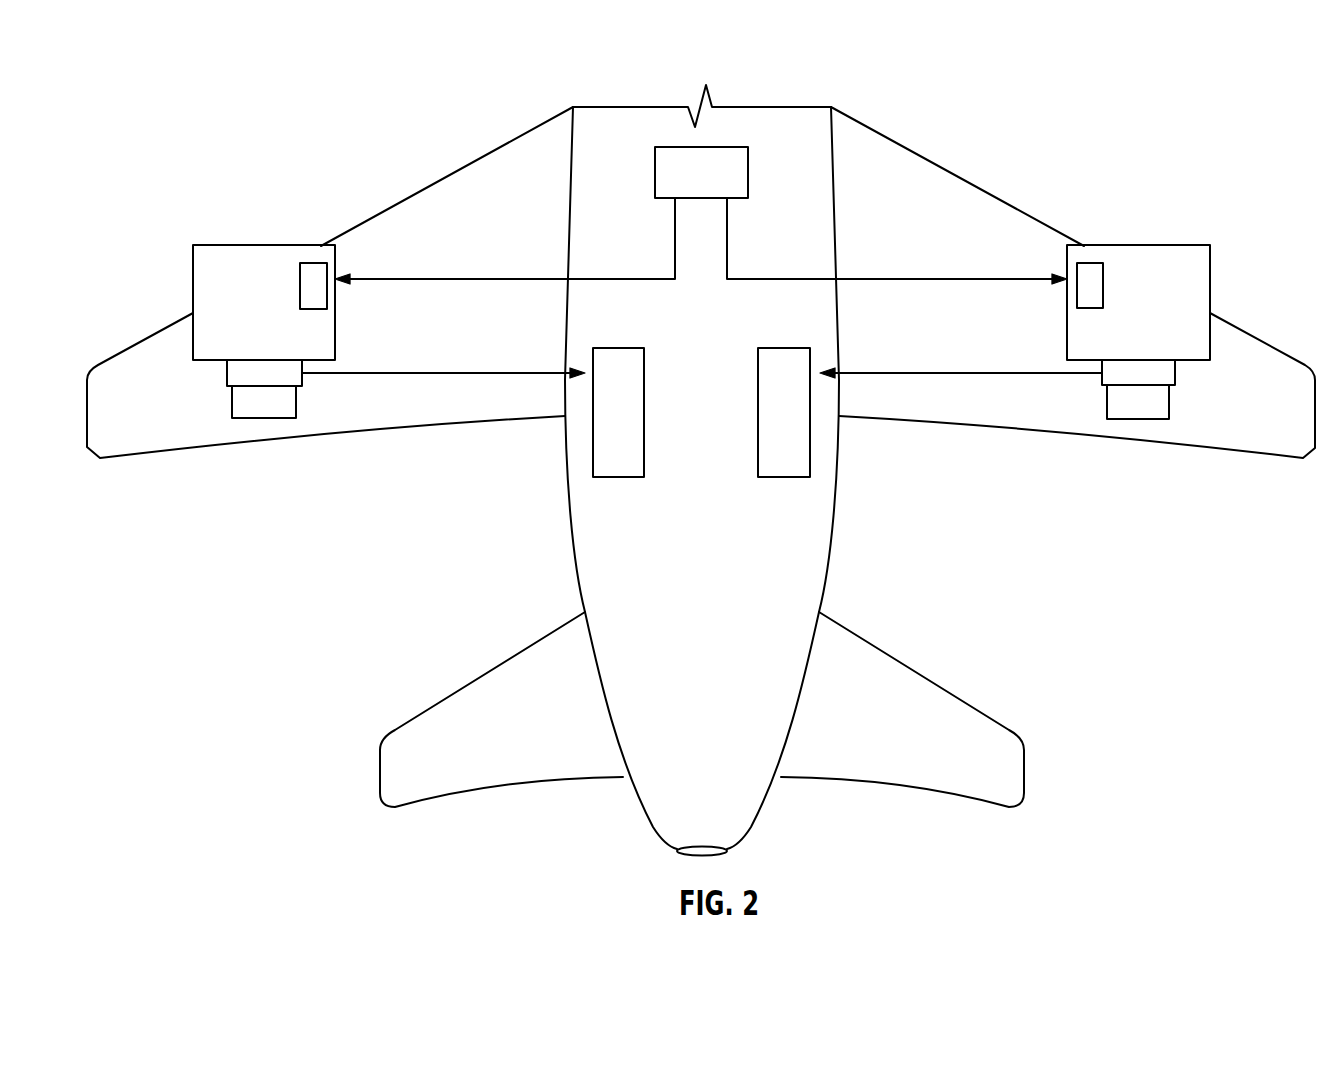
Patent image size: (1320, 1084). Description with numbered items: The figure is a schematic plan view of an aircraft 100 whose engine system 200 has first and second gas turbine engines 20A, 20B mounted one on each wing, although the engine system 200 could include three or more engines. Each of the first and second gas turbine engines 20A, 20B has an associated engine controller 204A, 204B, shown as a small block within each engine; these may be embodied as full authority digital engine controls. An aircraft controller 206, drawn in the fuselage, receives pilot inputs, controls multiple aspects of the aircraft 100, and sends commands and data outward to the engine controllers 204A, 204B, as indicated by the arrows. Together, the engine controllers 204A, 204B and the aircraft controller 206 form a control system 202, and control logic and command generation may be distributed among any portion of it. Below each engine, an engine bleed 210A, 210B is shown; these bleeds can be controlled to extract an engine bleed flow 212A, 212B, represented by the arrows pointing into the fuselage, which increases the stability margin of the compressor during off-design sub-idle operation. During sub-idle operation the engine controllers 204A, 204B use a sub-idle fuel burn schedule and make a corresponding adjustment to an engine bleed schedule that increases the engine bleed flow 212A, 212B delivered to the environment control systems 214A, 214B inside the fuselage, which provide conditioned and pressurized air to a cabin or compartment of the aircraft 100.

The aircraft 100 is at (482, 121).
The engine system 200 is at (218, 226).
The control system 202 is at (952, 186).
The first gas turbine engine 20A is at (193, 282).
The second gas turbine engine 20B is at (1210, 278).
The engine controller 204A is at (320, 273).
The engine controller 204B is at (1087, 273).
The aircraft controller 206 is at (722, 187).
The engine bleed 210A is at (302, 376).
The engine bleed 210B is at (1102, 376).
The engine bleed flow 212A is at (487, 371).
The engine bleed flow 212B is at (900, 371).
The environment control system 214A is at (618, 477).
The environment control system 214B is at (783, 477).